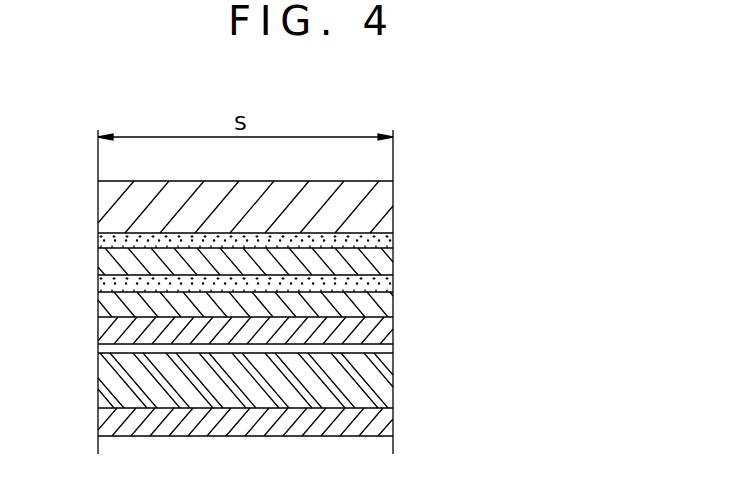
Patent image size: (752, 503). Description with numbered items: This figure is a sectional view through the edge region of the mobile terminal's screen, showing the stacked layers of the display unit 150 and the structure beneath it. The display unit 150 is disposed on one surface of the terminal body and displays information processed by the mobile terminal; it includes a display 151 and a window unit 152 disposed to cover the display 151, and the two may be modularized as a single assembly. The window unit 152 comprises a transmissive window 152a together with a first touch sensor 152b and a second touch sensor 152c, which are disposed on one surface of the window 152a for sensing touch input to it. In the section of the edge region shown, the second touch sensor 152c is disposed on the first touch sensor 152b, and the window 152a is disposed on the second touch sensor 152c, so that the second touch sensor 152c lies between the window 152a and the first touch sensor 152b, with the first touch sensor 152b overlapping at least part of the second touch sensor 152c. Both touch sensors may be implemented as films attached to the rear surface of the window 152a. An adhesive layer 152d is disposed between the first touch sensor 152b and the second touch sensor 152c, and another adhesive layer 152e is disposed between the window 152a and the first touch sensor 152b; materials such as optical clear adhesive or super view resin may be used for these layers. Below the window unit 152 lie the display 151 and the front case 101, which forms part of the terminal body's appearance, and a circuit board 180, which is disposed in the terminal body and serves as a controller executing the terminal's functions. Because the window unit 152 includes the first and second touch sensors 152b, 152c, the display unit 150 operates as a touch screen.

The display unit 150 is at (318, 294).
The display 151 is at (319, 380).
The window unit 152 is at (319, 249).
The window 152a is at (383, 203).
The first touch sensor 152b is at (290, 304).
The second touch sensor 152c is at (383, 261).
The adhesive layer 152d is at (383, 283).
The adhesive layer 152e is at (383, 240).
The front case 101 is at (110, 330).
The circuit board 180 is at (110, 424).